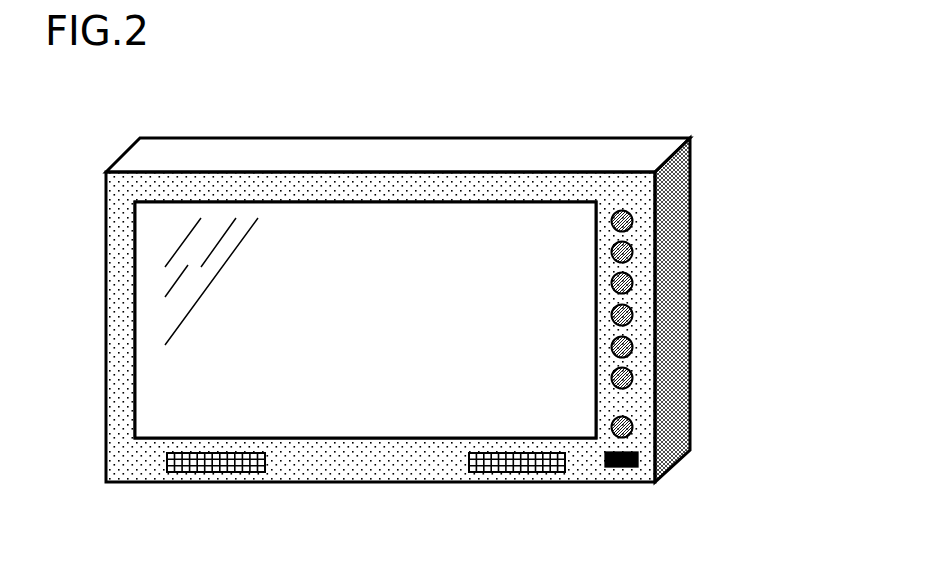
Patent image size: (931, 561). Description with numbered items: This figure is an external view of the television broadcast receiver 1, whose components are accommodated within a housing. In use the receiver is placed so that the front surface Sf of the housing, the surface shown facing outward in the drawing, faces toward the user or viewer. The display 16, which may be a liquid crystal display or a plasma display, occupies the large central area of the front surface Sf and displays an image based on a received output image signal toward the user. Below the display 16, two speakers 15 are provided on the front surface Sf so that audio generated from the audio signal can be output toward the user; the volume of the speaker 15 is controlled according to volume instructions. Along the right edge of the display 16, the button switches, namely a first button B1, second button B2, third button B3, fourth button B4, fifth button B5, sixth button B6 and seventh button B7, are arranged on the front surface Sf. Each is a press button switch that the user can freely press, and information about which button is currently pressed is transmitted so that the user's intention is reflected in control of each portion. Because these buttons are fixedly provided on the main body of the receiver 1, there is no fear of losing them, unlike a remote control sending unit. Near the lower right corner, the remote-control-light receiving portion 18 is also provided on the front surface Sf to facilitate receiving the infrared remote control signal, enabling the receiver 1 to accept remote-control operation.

The television broadcast receiver 1 is at (446, 304).
The display 16 is at (303, 215).
The front surface Sf is at (475, 187).
The first button B1 is at (631, 216).
The second button B2 is at (631, 247).
The third button B3 is at (631, 278).
The fourth button B4 is at (631, 310).
The fifth button B5 is at (631, 342).
The sixth button B6 is at (631, 373).
The seventh button B7 is at (631, 421).
The speaker 15 is at (232, 473).
The remote-control-light receiving portion 18 is at (638, 460).